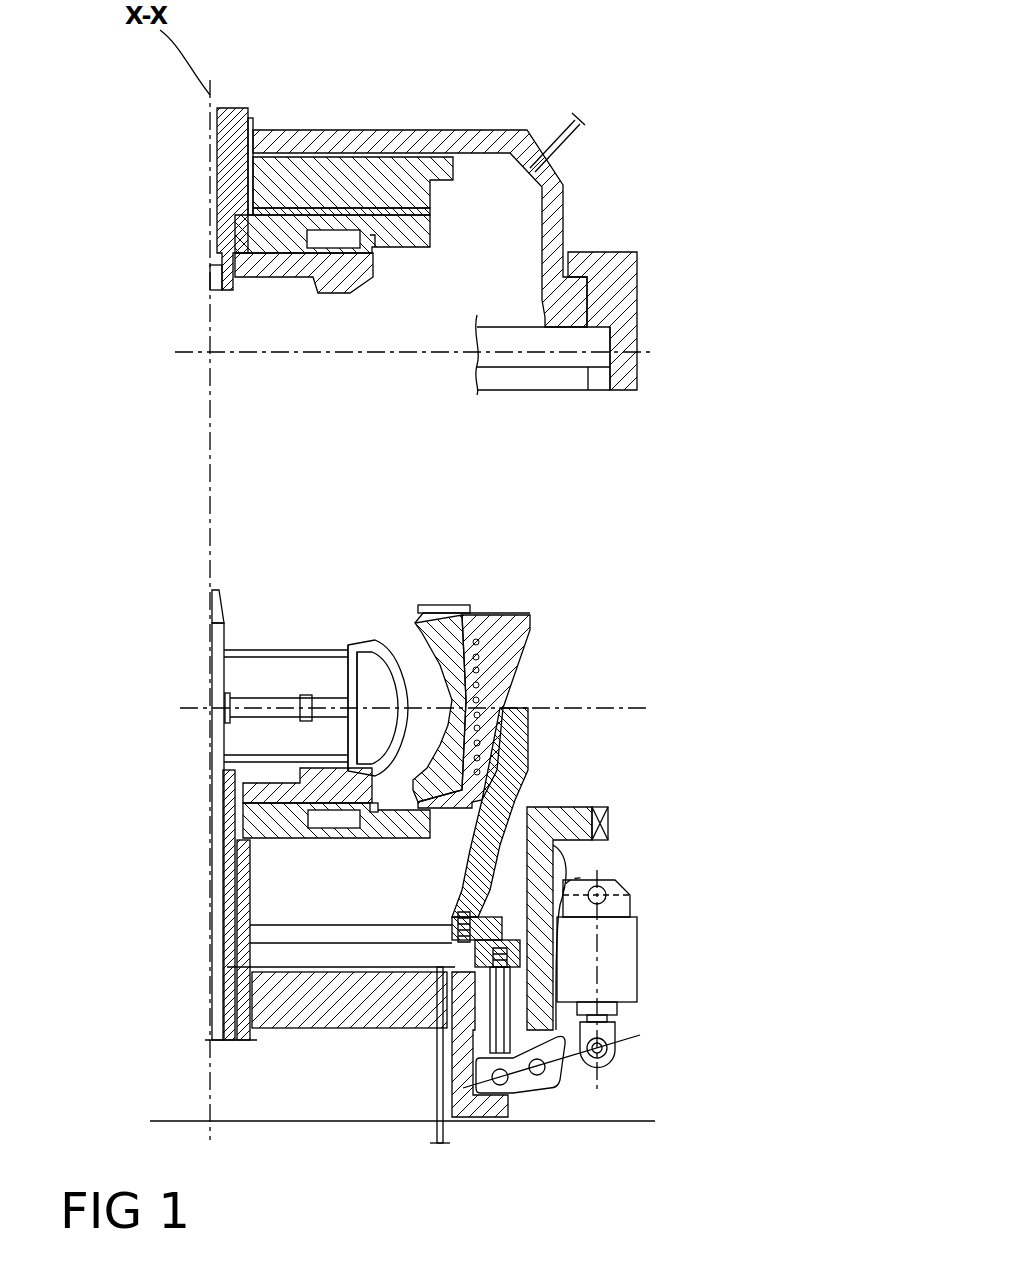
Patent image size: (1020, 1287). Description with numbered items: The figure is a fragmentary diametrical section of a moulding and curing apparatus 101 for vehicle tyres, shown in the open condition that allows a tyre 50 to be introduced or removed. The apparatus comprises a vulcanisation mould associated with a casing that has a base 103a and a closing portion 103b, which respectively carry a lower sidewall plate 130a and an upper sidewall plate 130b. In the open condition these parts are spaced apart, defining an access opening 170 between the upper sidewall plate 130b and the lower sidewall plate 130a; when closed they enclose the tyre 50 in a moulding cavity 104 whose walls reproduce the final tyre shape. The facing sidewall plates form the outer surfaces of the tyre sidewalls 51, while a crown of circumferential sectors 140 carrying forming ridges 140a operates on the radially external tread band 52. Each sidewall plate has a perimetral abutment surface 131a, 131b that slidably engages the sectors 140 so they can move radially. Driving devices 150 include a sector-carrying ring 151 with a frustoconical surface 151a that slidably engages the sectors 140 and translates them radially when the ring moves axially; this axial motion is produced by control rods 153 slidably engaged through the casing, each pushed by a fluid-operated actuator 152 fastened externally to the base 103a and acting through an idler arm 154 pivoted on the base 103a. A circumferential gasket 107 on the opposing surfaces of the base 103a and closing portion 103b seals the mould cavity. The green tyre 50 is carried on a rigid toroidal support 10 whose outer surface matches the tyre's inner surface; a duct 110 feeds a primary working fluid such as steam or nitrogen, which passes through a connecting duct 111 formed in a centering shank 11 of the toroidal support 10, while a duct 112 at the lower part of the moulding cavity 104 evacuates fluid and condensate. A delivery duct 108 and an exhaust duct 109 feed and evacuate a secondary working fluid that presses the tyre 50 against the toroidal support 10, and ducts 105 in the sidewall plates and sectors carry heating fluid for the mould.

The moulding and curing apparatus 101 is at (535, 92).
The delivery duct 108 is at (580, 140).
The closing portion 103b is at (562, 180).
The perimetral abutment surface 131b is at (400, 262).
The upper sidewall plate 130b is at (238, 230).
The ducts 105 is at (327, 248).
The tyre 50 is at (376, 638).
The tyre sidewalls 51 is at (357, 642).
The tread band 52 is at (362, 620).
The forming ridges 140a is at (436, 640).
The circumferential sectors 140 is at (497, 610).
The access opening 170 is at (625, 548).
The centering shank 11 is at (212, 630).
The toroidal support 10 is at (335, 678).
The connecting duct 111 is at (210, 675).
The moulding cavity 104 is at (240, 745).
The lower sidewall plate 130a is at (247, 790).
The sector-carrying ring 151 is at (525, 752).
The circumferential gasket 107 is at (557, 806).
The frustoconical surface 151a is at (553, 860).
The fluid-operated actuator 152 is at (630, 927).
The control rod 153 is at (505, 983).
The perimetral abutment surface 131a is at (393, 840).
The duct 112 is at (232, 973).
The duct 110 is at (220, 1015).
The driving devices 150 is at (640, 1013).
The idler arm 154 is at (573, 1070).
The base 103a is at (337, 1000).
The exhaust duct 109 is at (435, 1102).